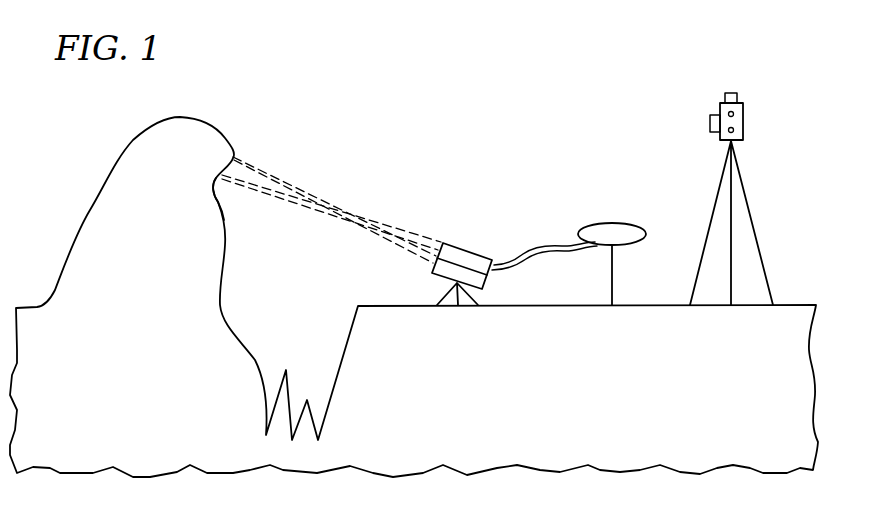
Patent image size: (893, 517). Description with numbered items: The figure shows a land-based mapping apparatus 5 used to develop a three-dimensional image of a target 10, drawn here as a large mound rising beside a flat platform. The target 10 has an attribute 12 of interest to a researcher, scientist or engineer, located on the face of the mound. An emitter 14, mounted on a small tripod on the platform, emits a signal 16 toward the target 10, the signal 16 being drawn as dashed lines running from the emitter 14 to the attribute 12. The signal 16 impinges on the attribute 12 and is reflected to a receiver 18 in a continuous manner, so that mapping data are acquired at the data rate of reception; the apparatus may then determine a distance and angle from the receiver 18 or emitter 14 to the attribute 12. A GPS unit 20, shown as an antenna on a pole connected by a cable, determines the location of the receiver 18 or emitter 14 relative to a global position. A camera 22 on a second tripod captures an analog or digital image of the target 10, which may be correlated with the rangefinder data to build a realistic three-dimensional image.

The mapping apparatus 5 is at (498, 184).
The target 10 is at (256, 119).
The attribute 12 is at (213, 201).
The emitter 14 is at (468, 247).
The signal 16 is at (308, 188).
The receiver 18 is at (487, 282).
The GPS unit 20 is at (623, 223).
The camera 22 is at (745, 122).